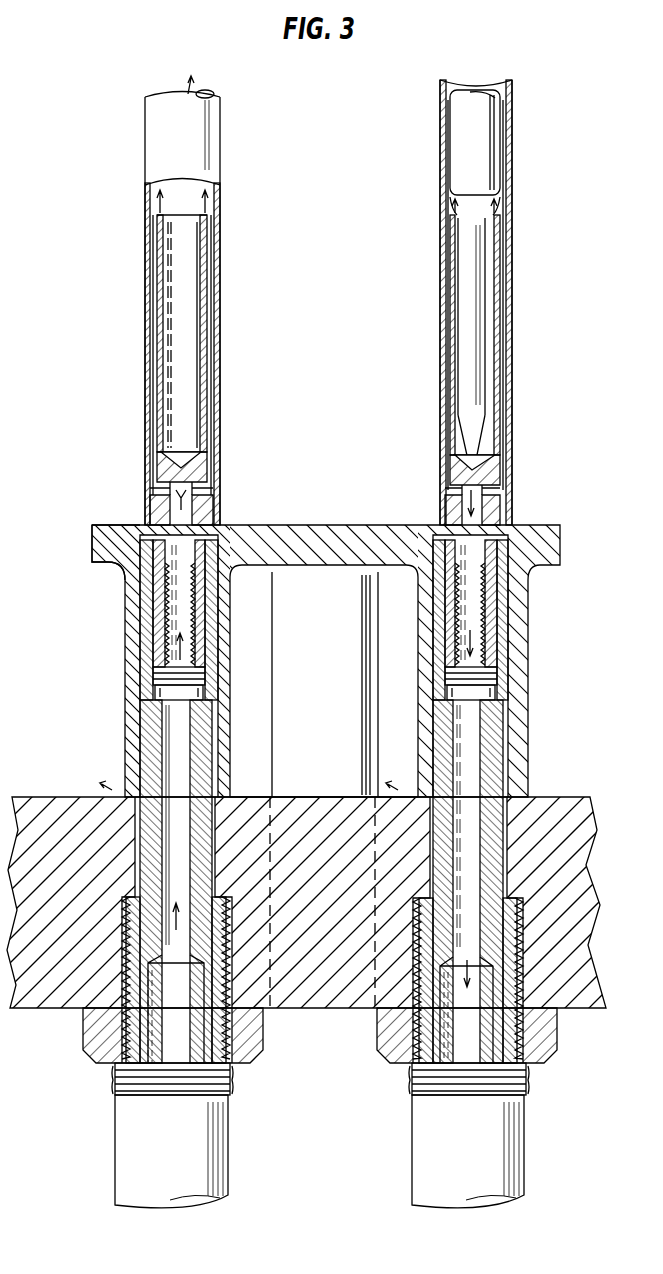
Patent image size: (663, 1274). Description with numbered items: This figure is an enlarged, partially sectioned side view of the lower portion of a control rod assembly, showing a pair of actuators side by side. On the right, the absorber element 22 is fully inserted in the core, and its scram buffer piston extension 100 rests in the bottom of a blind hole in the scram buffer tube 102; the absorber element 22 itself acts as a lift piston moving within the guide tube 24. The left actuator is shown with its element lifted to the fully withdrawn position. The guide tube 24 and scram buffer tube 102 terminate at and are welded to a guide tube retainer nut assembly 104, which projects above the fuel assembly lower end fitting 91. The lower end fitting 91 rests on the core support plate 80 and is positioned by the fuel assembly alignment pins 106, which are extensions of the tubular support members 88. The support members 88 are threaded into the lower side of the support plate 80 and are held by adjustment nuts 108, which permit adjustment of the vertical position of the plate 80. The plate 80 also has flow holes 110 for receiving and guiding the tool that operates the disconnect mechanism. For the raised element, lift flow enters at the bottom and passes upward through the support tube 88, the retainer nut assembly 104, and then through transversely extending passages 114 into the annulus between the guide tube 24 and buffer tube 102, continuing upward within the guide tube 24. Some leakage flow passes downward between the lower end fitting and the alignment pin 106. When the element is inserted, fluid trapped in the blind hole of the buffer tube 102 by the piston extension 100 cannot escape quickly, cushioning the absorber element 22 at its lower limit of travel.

The absorber element 22 is at (486, 144).
The guide tube 24 is at (513, 151).
The core support plate 80 is at (590, 861).
The tubular support member 88 is at (122, 1140).
The fuel assembly lower end fitting 91 is at (548, 530).
The scram buffer piston extension 100 is at (466, 333).
The scram buffer tube 102 is at (195, 302).
The guide tube retainer nut assembly 104 is at (133, 588).
The fuel assembly alignment pin 106 is at (135, 746).
The adjustment nut 108 is at (377, 1036).
The flow hole 110 is at (330, 916).
The transversely extending passage 114 is at (208, 498).